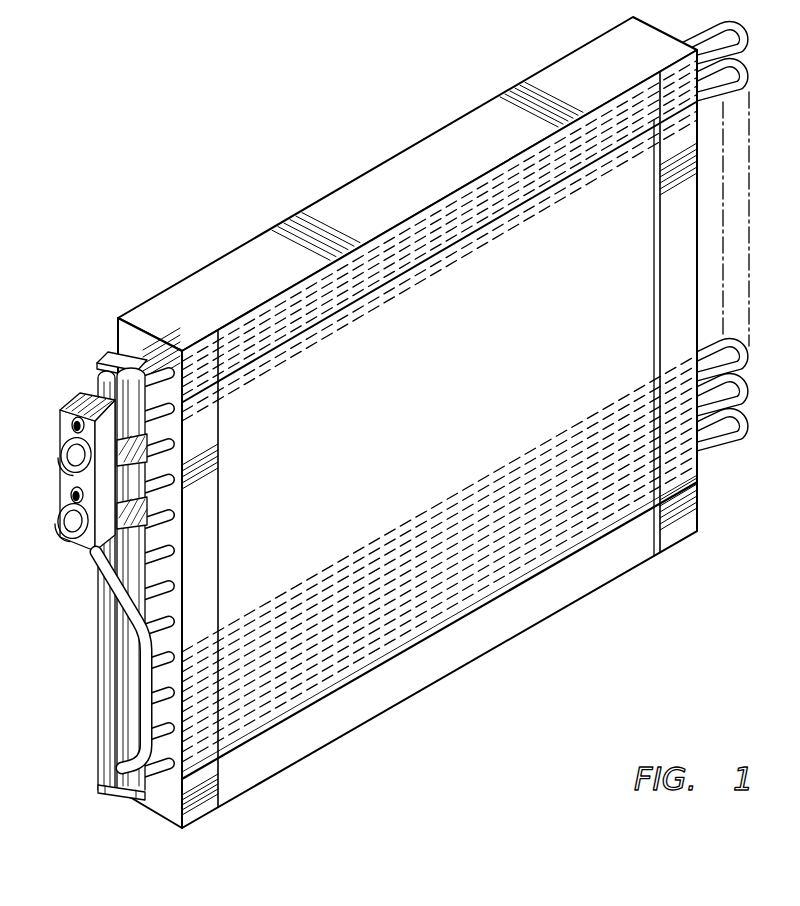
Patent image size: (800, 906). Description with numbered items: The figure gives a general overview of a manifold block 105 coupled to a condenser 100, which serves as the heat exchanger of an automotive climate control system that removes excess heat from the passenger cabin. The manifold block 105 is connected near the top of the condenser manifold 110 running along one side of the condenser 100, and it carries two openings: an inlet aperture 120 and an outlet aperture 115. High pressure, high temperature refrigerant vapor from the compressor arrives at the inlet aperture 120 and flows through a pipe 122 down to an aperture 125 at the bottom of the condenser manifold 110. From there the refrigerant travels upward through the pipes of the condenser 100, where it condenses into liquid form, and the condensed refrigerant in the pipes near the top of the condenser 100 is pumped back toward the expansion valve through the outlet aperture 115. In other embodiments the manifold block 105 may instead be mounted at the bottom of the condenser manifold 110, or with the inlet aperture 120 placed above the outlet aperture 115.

The condenser 100 is at (578, 597).
The manifold block 105 is at (60, 495).
The condenser manifold 110 is at (105, 782).
The outlet aperture 115 is at (61, 463).
The inlet aperture 120 is at (59, 536).
The pipe 122 is at (143, 690).
The aperture 125 is at (118, 786).